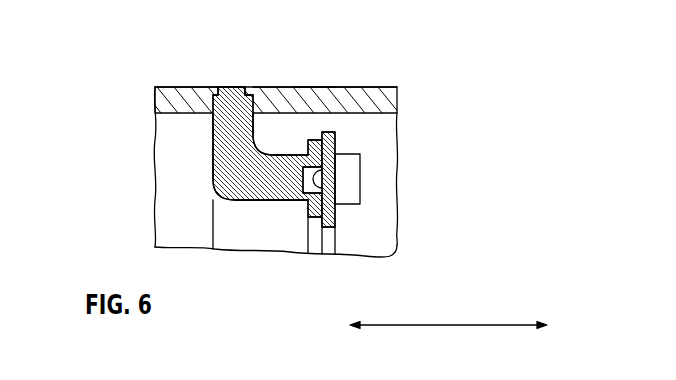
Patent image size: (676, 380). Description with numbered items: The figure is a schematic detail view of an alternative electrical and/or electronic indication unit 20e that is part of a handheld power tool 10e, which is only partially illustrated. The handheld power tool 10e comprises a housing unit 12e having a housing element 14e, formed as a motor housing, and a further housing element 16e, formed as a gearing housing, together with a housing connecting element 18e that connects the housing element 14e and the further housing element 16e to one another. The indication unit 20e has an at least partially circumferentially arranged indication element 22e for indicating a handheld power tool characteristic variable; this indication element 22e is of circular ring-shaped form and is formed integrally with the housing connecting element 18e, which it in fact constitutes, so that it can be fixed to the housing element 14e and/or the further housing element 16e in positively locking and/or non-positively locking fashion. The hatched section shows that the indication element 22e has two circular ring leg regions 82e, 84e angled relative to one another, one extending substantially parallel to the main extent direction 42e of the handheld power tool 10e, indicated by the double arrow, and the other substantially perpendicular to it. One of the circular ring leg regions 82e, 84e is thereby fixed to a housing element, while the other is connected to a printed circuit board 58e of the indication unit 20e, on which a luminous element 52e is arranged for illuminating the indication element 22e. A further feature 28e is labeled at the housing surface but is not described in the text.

The handheld power tool 10e is at (118, 60).
The housing unit 12e is at (437, 90).
The housing element 14e is at (376, 87).
The further housing element 16e is at (168, 87).
The housing connecting element 18e is at (233, 87).
The indication element 22e is at (233, 91).
The connection region 28e is at (315, 87).
The electrical and/or electronic indication unit 20e is at (437, 198).
The main extent direction 42e is at (492, 322).
The luminous element 52e is at (324, 178).
The printed circuit board 58e is at (338, 228).
The circular ring leg region 82e is at (203, 140).
The circular ring leg region 84e is at (255, 210).